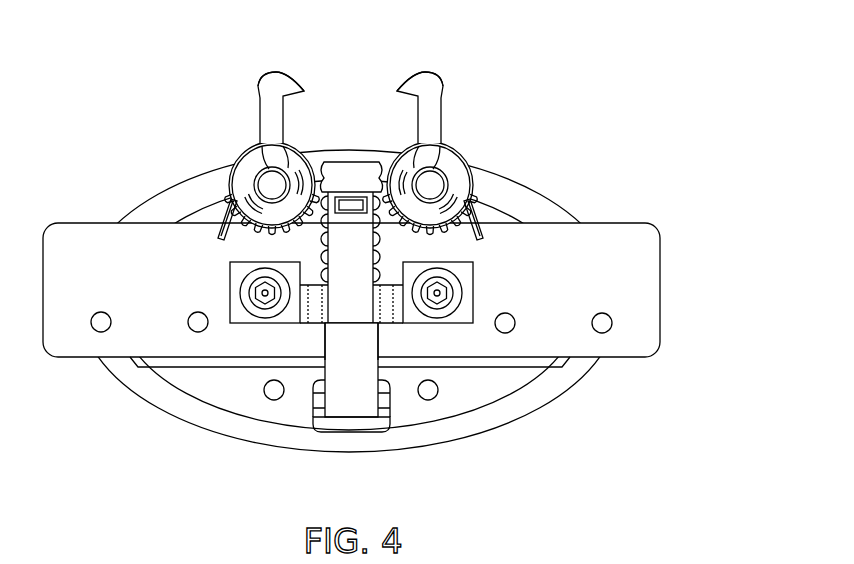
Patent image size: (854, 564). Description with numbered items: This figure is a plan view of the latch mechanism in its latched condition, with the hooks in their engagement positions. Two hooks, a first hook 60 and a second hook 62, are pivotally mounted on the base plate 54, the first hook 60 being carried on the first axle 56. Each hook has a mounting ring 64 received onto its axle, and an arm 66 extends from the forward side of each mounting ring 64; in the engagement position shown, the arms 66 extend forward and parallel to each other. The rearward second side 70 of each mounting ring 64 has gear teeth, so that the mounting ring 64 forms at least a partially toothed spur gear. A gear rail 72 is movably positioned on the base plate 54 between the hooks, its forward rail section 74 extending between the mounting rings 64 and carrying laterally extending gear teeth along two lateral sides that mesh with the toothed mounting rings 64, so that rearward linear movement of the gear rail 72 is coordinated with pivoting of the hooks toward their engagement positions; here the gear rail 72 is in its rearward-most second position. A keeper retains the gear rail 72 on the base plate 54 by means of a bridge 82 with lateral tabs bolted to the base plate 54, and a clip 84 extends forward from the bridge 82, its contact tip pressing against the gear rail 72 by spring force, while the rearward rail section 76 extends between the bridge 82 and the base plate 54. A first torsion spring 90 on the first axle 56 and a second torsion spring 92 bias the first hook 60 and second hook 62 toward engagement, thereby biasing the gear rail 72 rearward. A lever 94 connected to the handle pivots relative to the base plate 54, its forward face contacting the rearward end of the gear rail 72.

The base plate 54 is at (642, 236).
The first axle 56 is at (430, 185).
The first hook 60 is at (430, 83).
The second hook 62 is at (283, 83).
The mounting ring 64 is at (257, 154).
The arm 66 is at (443, 90).
The second side 70 is at (234, 240).
The gear rail 72 is at (342, 337).
The forward rail section 74 is at (350, 166).
The rearward rail section 76 is at (338, 382).
The bridge 82 is at (362, 312).
The clip 84 is at (362, 263).
The first torsion spring 90 is at (483, 237).
The second torsion spring 92 is at (220, 237).
The lever 94 is at (355, 418).